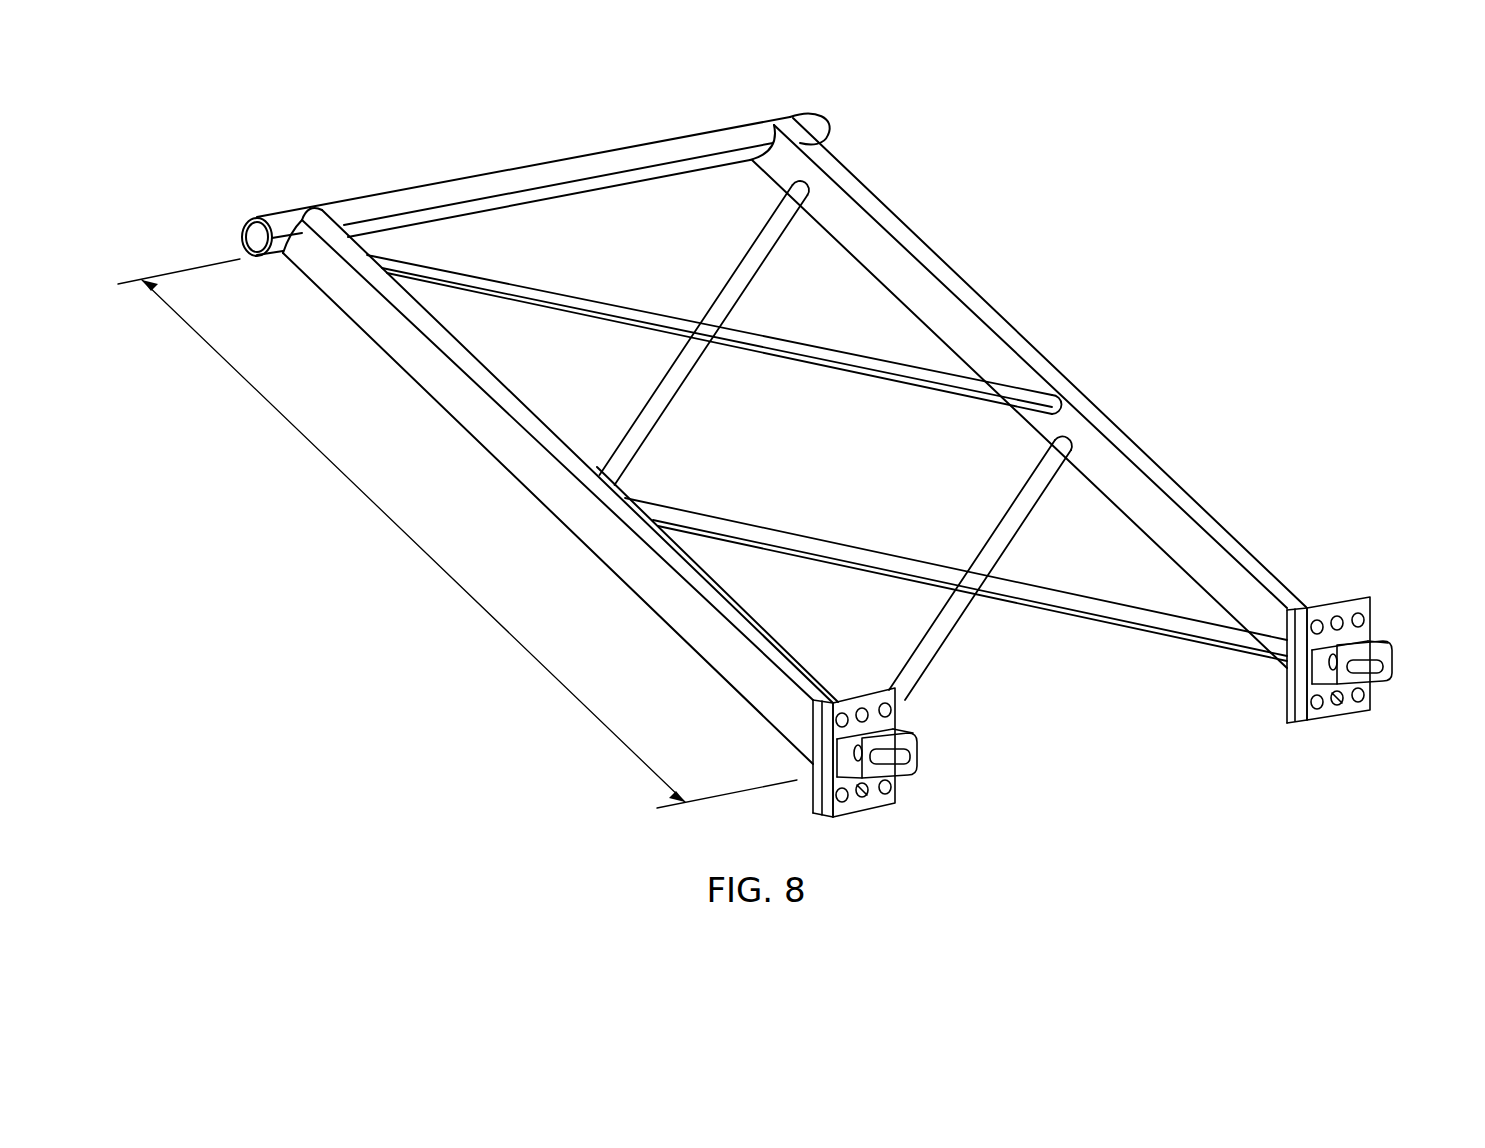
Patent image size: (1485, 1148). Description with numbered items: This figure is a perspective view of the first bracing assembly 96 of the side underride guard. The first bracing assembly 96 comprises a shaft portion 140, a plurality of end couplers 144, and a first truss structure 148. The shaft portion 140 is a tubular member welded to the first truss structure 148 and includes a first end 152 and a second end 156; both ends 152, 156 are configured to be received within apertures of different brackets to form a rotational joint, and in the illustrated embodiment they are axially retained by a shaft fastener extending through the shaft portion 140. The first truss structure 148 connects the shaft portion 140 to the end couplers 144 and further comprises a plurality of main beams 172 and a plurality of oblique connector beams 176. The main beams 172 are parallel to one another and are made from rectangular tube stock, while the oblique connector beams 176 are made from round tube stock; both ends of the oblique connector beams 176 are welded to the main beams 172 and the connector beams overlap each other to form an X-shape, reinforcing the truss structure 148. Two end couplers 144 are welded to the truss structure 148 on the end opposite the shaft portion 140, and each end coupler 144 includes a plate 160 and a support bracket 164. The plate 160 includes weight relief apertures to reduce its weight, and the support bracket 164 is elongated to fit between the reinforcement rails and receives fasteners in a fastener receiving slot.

The first bracing assembly 96 is at (824, 470).
The shaft portion 140 is at (556, 163).
The end coupler 144 is at (1132, 675).
The first truss structure 148 is at (410, 540).
The first end 152 is at (830, 124).
The second end 156 is at (247, 222).
The plate 160 is at (905, 712).
The support bracket 164 is at (920, 750).
The main beam 172 is at (474, 437).
The oblique connector beam 176 is at (700, 358).